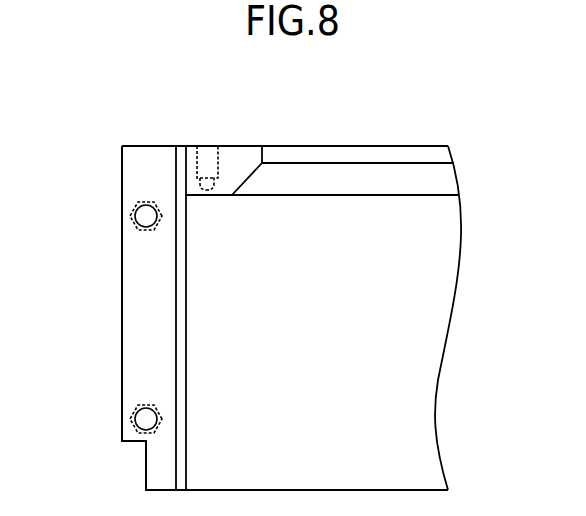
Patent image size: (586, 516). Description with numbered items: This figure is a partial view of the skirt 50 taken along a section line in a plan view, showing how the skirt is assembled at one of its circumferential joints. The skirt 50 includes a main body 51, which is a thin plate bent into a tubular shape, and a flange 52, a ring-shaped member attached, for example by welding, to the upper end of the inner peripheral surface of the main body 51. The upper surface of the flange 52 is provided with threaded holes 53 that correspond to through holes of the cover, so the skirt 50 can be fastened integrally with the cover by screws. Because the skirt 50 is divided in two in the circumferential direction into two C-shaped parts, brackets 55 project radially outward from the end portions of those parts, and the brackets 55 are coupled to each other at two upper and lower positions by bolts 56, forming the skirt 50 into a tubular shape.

The skirt 50 is at (121, 288).
The main body 51 is at (187, 300).
The flange 52 is at (245, 146).
The threaded hole 53 is at (205, 154).
The bracket 55 is at (121, 353).
The bolt 56 is at (129, 216).